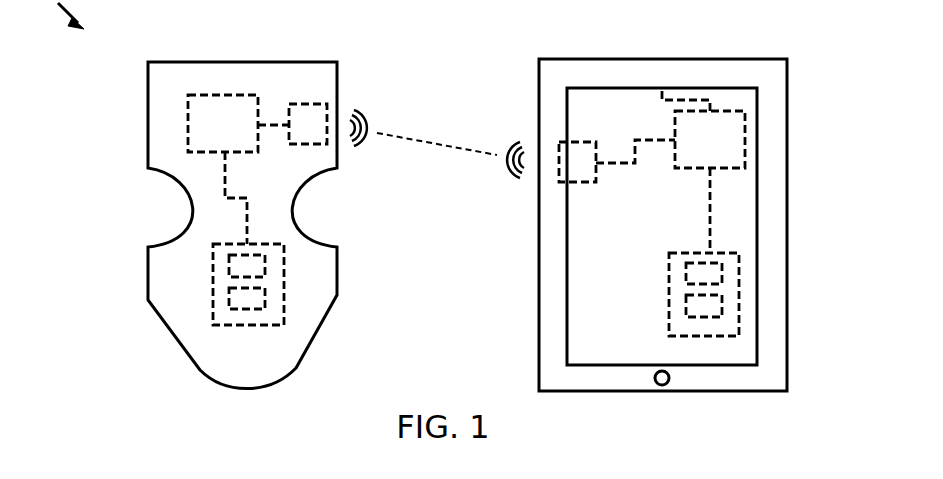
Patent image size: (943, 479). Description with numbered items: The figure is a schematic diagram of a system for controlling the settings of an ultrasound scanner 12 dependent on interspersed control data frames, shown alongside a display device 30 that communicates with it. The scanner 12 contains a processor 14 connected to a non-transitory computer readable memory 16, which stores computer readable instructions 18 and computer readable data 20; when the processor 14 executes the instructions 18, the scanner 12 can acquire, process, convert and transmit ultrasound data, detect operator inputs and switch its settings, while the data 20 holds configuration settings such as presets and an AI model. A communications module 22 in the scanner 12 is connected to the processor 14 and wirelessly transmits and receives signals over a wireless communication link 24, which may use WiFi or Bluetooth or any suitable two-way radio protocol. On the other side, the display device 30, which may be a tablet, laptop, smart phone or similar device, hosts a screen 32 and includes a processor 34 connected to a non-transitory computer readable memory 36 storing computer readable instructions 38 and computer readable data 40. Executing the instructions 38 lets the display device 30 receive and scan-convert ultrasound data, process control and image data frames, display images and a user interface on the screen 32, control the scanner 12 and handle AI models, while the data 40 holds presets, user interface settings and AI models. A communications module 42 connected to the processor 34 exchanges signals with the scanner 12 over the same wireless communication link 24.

The ultrasound scanner 12 is at (303, 355).
The processor 14 is at (225, 93).
The non-transitory computer readable memory 16 is at (284, 303).
The computer readable instructions 18 is at (248, 312).
The computer readable data 20 is at (230, 265).
The communications module 22 is at (305, 102).
The wireless communication link 24 is at (432, 142).
The display device 30 is at (787, 152).
The screen 32 is at (758, 215).
The processor 34 is at (743, 132).
The non-transitory computer readable memory 36 is at (738, 293).
The computer readable instructions 38 is at (688, 273).
The computer readable data 40 is at (688, 307).
The communications module 42 is at (583, 182).